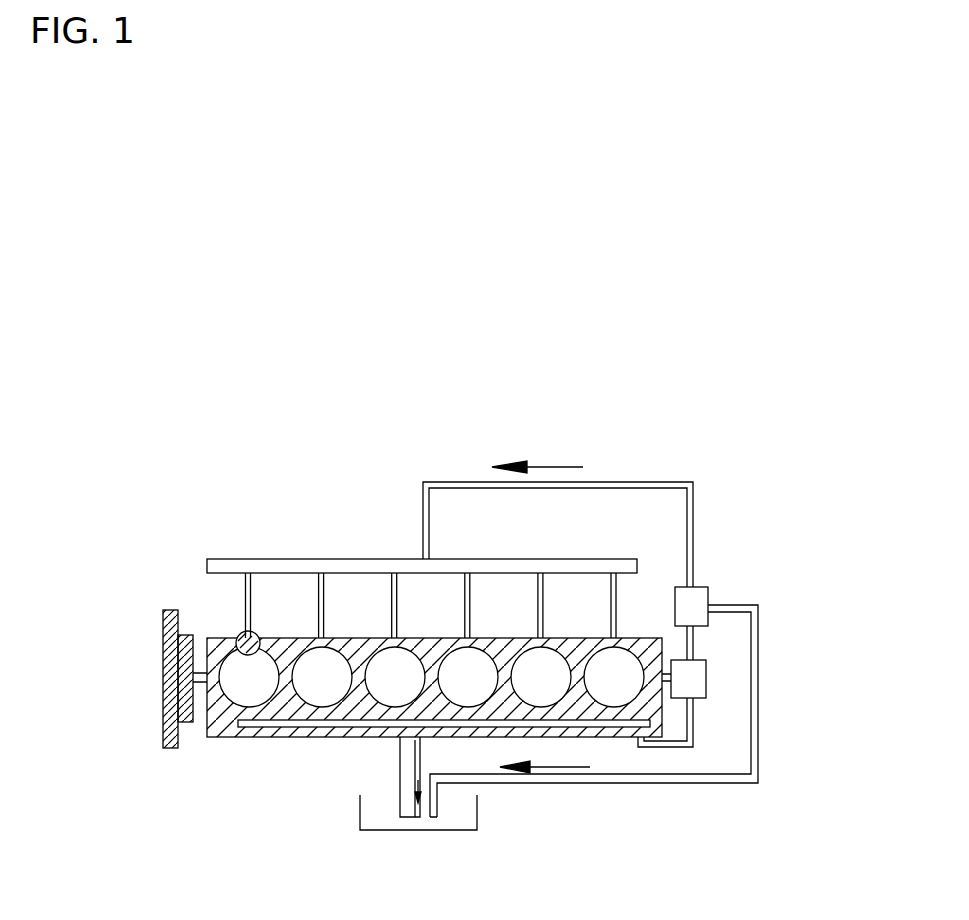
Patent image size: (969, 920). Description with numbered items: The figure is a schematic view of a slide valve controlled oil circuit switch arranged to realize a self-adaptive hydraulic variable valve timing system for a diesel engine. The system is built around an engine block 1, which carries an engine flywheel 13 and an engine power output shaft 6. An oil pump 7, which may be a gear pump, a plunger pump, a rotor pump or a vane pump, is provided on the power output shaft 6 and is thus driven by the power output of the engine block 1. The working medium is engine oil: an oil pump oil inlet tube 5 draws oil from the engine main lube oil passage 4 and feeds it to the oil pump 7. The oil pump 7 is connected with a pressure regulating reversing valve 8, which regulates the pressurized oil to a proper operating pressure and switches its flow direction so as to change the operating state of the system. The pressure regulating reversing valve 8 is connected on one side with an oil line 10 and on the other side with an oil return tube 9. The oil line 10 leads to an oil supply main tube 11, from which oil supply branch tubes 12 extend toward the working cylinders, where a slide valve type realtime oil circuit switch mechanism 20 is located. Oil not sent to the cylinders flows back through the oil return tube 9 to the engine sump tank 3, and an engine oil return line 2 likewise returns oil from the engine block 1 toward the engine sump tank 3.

The engine block 1 is at (207, 716).
The engine oil return line 2 is at (400, 768).
The engine sump tank 3 is at (362, 820).
The engine main lube oil passage 4 is at (593, 724).
The oil pump oil inlet tube 5 is at (694, 720).
The engine power output shaft 6 is at (672, 682).
The oil pump 7 is at (694, 680).
The pressure regulating reversing valve 8 is at (698, 612).
The oil return tube 9 is at (758, 615).
The oil line 10 is at (694, 512).
The oil supply main tube 11 is at (258, 563).
The oil supply branch tubes 12 is at (243, 588).
The engine flywheel 13 is at (163, 663).
The slide valve type realtime oil circuit switch mechanism 20 is at (238, 637).